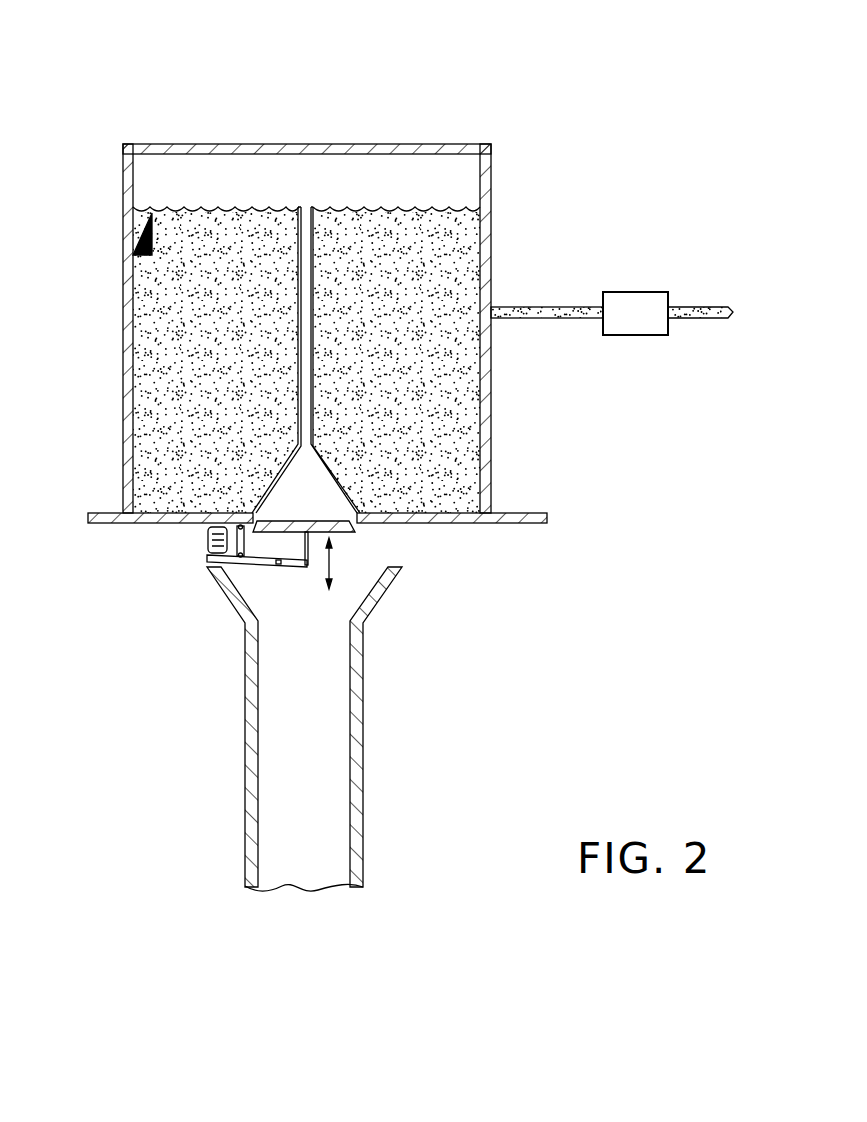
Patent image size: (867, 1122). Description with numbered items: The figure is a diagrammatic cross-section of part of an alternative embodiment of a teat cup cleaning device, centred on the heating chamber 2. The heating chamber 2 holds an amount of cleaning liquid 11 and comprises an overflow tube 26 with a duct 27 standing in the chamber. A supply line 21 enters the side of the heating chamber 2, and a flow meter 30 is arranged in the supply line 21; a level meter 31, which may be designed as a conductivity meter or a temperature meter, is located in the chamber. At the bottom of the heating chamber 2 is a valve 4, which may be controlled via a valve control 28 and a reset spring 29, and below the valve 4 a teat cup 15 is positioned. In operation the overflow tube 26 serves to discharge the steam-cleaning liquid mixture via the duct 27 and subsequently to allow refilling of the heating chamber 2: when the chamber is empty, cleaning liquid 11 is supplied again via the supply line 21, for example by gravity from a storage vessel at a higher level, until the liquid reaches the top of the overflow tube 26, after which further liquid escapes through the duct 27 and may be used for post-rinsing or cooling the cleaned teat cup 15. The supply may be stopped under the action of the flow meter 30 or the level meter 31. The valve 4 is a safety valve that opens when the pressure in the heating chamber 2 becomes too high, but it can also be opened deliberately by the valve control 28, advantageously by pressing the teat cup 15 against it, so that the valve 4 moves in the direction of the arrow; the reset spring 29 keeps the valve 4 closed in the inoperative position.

The heating chamber 2 is at (445, 148).
The cleaning liquid 11 is at (250, 365).
The overflow tube 26 is at (297, 238).
The duct 27 is at (305, 208).
The level meter 31 is at (146, 236).
The supply line 21 is at (538, 313).
The flow meter 30 is at (632, 315).
The valve 4 is at (341, 526).
The valve control 28 is at (279, 564).
The reset spring 29 is at (210, 537).
The teat cup 15 is at (357, 733).